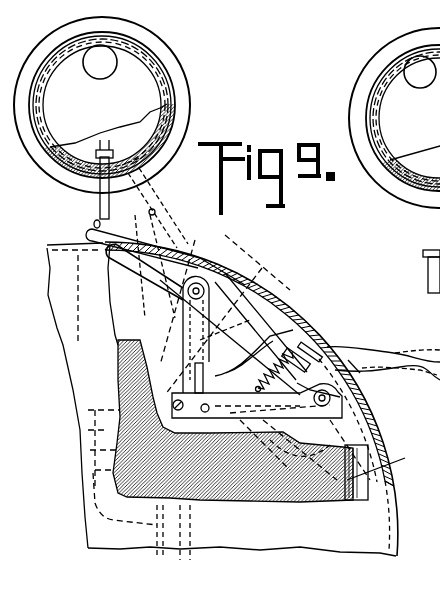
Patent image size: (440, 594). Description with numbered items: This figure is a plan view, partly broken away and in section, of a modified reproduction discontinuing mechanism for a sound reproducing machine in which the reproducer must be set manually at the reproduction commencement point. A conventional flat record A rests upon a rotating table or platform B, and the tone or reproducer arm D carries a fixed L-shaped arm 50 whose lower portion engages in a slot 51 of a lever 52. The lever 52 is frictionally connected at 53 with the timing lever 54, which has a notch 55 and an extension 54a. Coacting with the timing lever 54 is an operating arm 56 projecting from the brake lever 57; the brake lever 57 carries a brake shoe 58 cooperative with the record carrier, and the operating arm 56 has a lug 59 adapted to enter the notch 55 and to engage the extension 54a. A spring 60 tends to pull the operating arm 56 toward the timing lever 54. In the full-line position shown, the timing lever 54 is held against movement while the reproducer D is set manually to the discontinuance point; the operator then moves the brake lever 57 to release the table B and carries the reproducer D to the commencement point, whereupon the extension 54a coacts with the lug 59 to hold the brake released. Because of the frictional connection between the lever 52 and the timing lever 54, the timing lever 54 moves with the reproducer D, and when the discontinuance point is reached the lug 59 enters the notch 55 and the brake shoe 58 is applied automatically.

The L-shaped arm 50 is at (102, 205).
The slot 51 is at (190, 254).
The lever 52 is at (225, 268).
The frictional connection 53 is at (245, 290).
The timing lever 54 is at (205, 335).
The extension 54a is at (295, 335).
The notch 55 is at (195, 362).
The operating arm 56 is at (265, 398).
The brake lever 57 is at (350, 362).
The brake shoe 58 is at (327, 346).
The lug 59 is at (170, 390).
The spring 60 is at (275, 372).
The tone arm D is at (163, 128).
The flat record A is at (386, 468).
The rotating table B is at (377, 513).